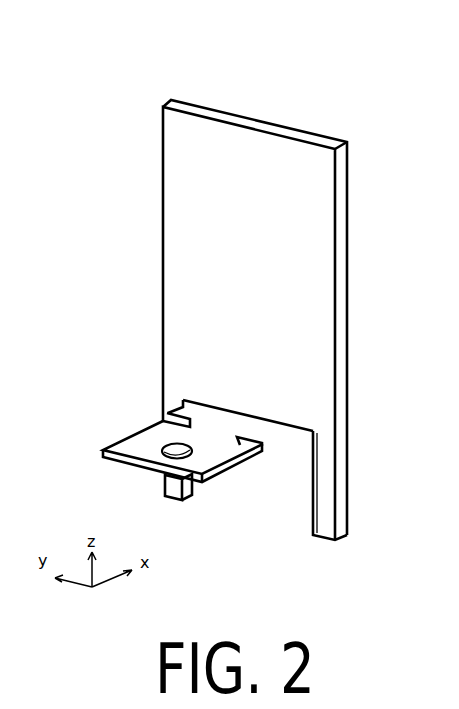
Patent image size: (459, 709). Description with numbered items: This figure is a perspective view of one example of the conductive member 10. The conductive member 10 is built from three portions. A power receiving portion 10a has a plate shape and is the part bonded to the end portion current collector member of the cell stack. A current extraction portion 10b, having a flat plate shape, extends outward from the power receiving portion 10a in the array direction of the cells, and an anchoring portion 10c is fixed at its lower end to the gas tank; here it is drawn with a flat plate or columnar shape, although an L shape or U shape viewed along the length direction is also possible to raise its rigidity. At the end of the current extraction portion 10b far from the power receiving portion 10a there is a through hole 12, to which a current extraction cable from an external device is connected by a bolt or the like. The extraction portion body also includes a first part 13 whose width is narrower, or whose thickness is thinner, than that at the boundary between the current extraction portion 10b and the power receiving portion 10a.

The conductive member 10 is at (135, 98).
The power receiving portion 10a is at (322, 306).
The current extraction portion 10b is at (217, 452).
The anchoring portion 10c is at (327, 488).
The through hole 12 is at (176, 437).
The first part 13 is at (207, 430).